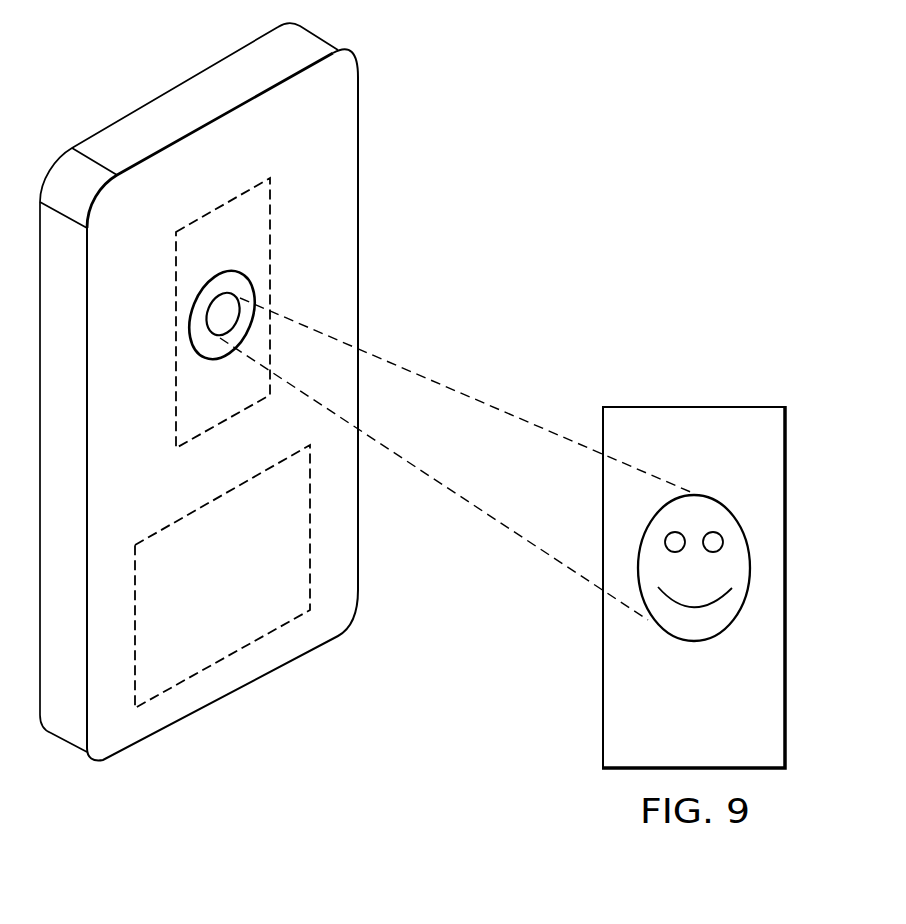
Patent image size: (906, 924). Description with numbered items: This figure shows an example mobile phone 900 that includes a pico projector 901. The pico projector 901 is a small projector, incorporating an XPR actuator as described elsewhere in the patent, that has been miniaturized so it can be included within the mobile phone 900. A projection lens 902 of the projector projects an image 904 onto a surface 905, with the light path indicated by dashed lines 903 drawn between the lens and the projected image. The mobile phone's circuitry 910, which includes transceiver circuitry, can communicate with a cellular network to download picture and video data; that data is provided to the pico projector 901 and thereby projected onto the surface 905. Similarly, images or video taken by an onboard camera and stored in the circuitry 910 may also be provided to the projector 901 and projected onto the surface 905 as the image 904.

The mobile phone 900 is at (120, 108).
The pico projector 901 is at (273, 208).
The projection lens 902 is at (192, 327).
The field of view lines 903 is at (478, 400).
The image 904 is at (692, 643).
The surface 905 is at (736, 396).
The circuitry 910 is at (183, 520).